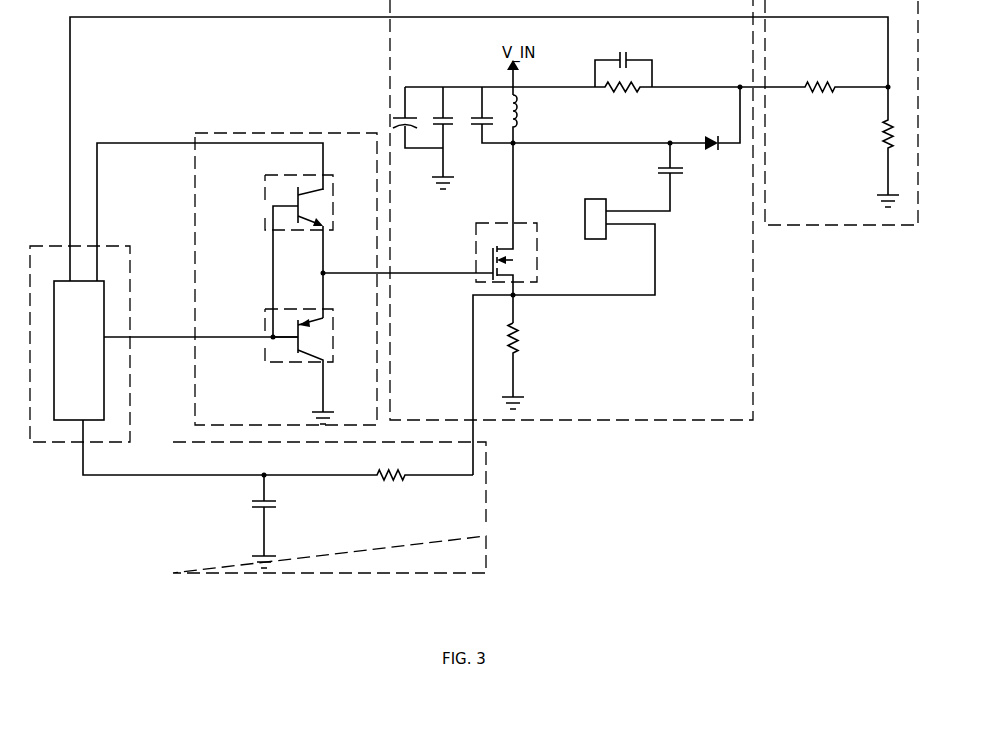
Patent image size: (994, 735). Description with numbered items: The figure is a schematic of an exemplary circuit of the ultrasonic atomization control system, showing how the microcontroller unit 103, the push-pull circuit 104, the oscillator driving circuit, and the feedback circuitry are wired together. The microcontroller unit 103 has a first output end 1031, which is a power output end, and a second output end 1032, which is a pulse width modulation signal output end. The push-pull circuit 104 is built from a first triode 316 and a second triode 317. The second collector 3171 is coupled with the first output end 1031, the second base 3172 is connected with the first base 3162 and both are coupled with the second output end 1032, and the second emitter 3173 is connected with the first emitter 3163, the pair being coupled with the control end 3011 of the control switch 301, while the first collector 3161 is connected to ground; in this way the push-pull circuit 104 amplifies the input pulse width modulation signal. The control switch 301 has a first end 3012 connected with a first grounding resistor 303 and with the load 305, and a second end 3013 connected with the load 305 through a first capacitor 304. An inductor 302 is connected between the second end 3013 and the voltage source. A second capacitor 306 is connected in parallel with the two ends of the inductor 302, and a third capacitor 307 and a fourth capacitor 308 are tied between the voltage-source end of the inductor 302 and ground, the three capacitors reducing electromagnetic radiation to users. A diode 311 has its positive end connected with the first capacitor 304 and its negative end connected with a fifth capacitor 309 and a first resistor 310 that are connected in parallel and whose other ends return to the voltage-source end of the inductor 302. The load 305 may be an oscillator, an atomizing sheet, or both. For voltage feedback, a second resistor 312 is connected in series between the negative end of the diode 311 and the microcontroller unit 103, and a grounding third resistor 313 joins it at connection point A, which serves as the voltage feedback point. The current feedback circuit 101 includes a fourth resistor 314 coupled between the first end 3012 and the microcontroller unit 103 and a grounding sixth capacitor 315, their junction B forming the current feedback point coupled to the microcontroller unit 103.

The current feedback circuit 101 is at (487, 530).
The microcontroller unit 103 is at (34, 246).
The first output end 1031 is at (97, 270).
The second output end 1032 is at (104, 330).
The push-pull circuit 104 is at (262, 135).
The control switch 301 is at (499, 234).
The control end 3011 is at (490, 277).
The first end 3012 is at (512, 277).
The second end 3013 is at (512, 237).
The inductor 302 is at (531, 120).
The first grounding resistor 303 is at (525, 366).
The first capacitor 304 is at (656, 160).
The load 305 is at (627, 206).
The second capacitor 306 is at (494, 115).
The third capacitor 307 is at (456, 138).
The fourth capacitor 308 is at (418, 117).
The fifth capacitor 309 is at (623, 59).
The first resistor 310 is at (623, 99).
The diode 311 is at (628, 118).
The second resistor 312 is at (778, 77).
The third resistor 313 is at (841, 112).
The fourth resistor 314 is at (278, 462).
The sixth capacitor 315 is at (280, 511).
The first triode 316 is at (299, 358).
The first collector 3161 is at (322, 350).
The first base 3162 is at (287, 340).
The first emitter 3163 is at (322, 322).
The second triode 317 is at (289, 250).
The second collector 3171 is at (318, 192).
The second base 3172 is at (290, 210).
The second emitter 3173 is at (318, 224).